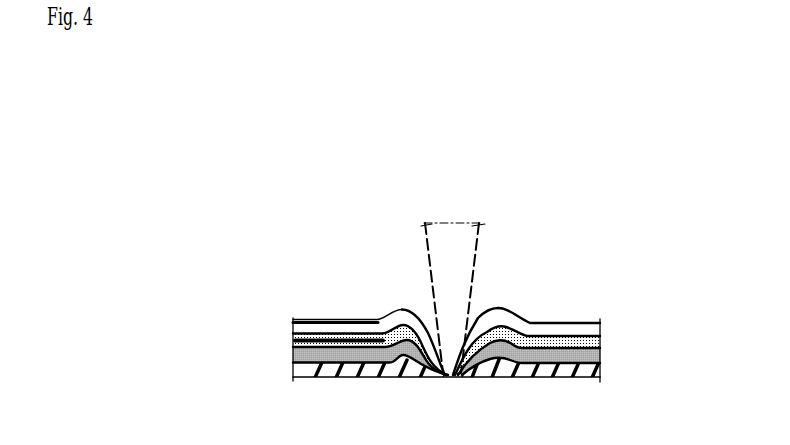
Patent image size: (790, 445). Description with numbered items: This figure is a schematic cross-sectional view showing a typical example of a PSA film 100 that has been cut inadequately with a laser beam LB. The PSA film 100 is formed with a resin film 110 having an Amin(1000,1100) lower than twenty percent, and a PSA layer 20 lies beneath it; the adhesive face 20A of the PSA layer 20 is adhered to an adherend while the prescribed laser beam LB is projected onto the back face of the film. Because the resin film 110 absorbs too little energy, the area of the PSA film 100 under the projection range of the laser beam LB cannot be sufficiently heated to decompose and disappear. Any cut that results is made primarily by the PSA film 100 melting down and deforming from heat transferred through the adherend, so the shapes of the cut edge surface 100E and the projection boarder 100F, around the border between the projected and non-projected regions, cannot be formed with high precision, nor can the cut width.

The PSA film 100 is at (474, 296).
The cut edge surface 100E is at (437, 355).
The projection boarder 100F is at (483, 311).
The resin film 110 is at (597, 341).
The PSA layer 20 is at (439, 368).
The adhesive face 20A is at (322, 378).
The laser beam LB is at (476, 236).